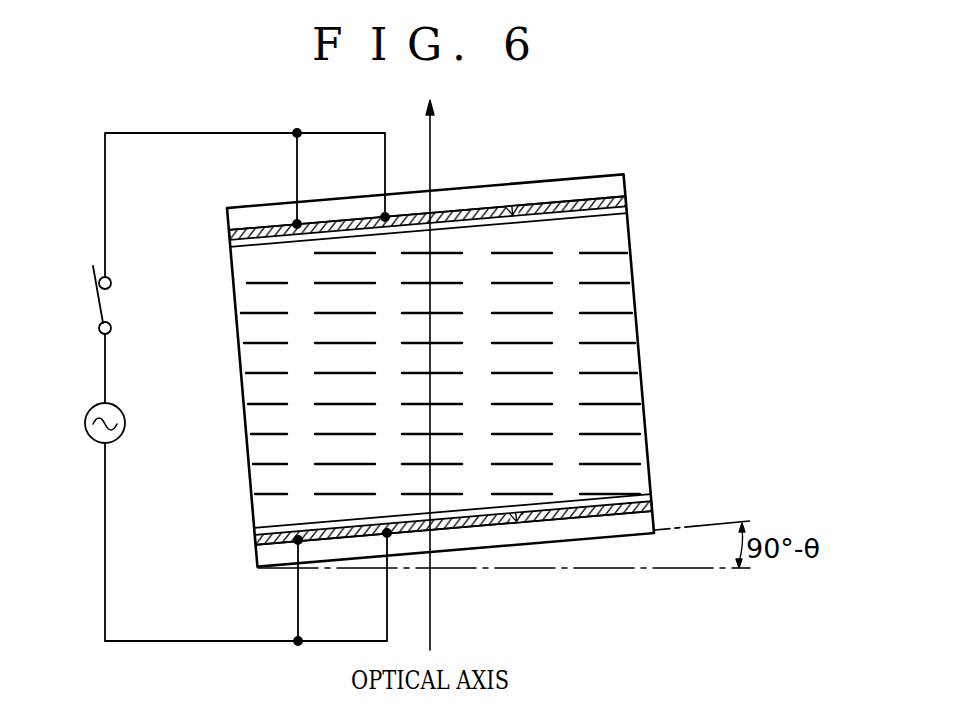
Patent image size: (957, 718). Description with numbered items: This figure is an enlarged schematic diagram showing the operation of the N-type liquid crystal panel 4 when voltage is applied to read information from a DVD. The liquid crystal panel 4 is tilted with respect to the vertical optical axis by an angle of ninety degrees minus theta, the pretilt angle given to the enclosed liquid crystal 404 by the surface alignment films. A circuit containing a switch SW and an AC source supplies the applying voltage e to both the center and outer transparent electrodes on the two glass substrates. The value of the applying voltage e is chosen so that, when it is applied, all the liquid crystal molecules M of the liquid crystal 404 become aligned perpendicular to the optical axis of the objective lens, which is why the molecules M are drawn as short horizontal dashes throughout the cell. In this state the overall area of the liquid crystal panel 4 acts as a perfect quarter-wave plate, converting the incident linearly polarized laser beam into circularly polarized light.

The liquid crystal panel 4 is at (232, 509).
The liquid crystal 404 is at (668, 487).
The liquid crystal molecules M is at (248, 282).
The switch SW is at (97, 300).
The applying voltage e is at (87, 425).